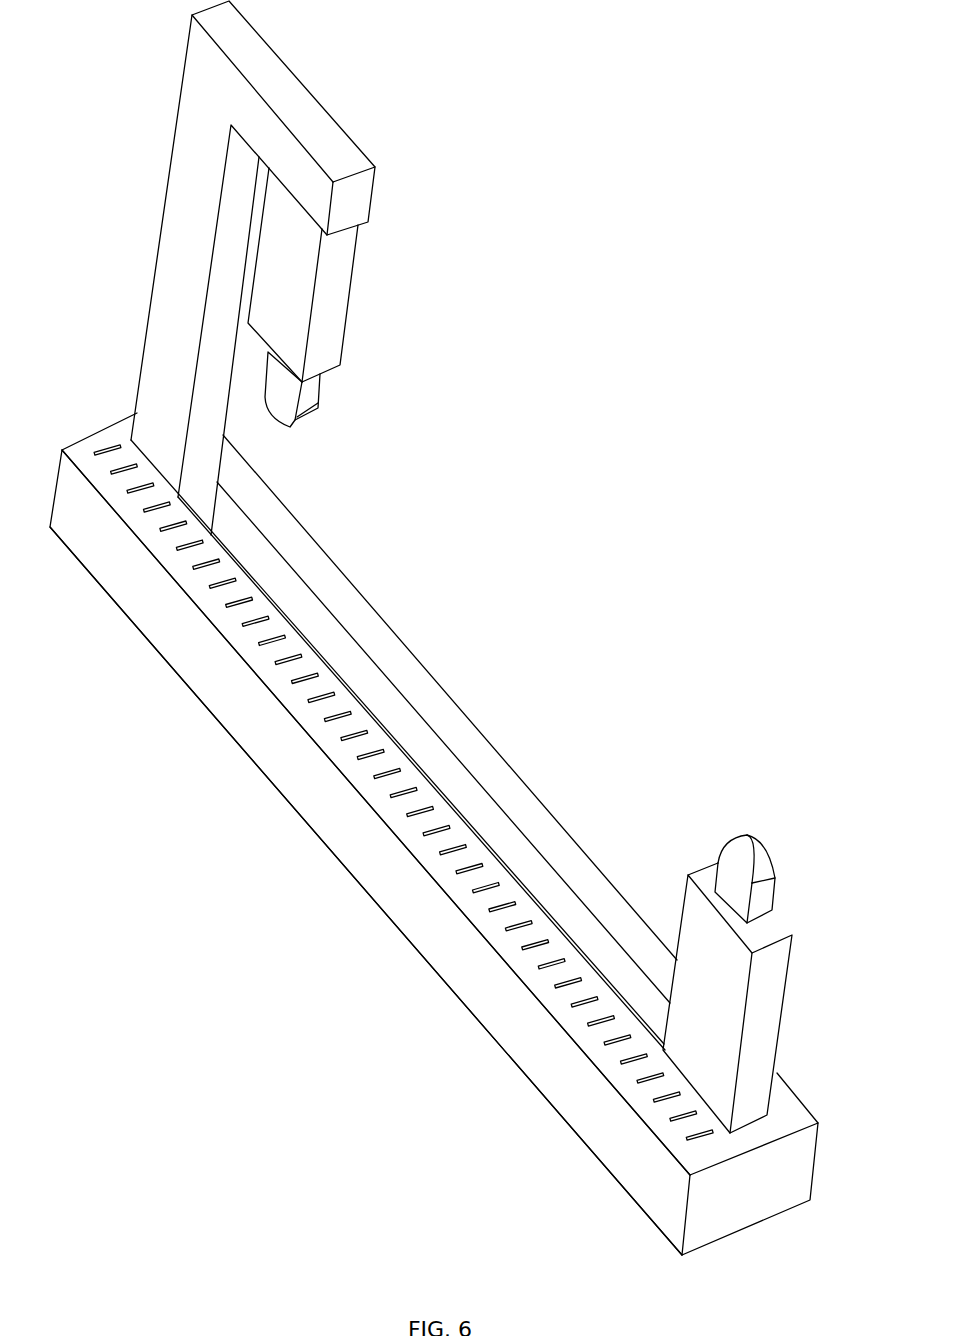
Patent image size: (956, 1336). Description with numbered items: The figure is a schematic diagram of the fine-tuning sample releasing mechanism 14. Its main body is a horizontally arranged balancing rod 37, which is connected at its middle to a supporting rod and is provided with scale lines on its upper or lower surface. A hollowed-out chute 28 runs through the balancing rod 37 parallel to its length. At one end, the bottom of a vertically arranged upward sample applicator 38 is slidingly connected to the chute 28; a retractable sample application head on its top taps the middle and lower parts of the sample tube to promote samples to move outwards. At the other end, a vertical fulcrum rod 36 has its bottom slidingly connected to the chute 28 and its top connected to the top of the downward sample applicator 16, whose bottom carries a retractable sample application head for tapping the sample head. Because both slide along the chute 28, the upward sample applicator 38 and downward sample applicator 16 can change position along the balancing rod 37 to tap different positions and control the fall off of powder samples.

The fine-tuning sample releasing mechanism 14 is at (205, 648).
The downward sample applicator 16 is at (333, 302).
The chute 28 is at (342, 642).
The fulcrum rod 36 is at (176, 270).
The balancing rod 37 is at (370, 848).
The upward sample applicator 38 is at (695, 910).